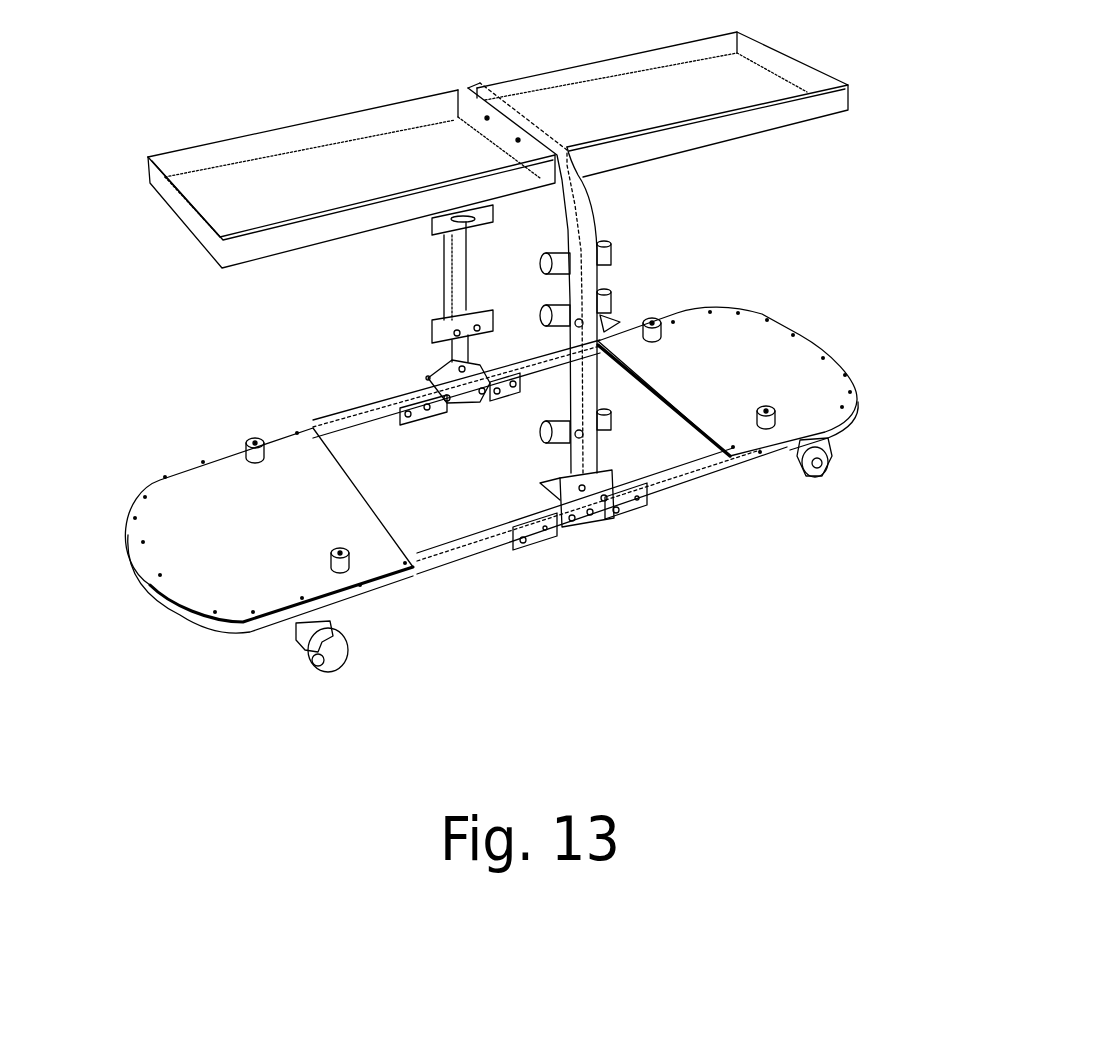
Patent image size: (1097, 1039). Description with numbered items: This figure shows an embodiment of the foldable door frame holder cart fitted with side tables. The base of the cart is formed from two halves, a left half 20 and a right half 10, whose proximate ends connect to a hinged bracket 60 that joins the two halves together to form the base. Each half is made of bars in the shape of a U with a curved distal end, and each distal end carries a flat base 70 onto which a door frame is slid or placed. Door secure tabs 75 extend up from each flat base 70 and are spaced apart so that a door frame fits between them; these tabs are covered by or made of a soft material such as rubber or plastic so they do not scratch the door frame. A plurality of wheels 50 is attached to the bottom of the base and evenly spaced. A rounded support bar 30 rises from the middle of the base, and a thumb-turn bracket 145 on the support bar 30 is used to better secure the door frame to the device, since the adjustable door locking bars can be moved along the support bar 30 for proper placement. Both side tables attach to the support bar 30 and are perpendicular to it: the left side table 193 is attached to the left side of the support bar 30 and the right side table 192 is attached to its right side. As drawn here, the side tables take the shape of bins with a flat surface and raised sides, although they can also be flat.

The left side table 193 is at (262, 155).
The right side table 192 is at (805, 75).
The support bar 30 is at (610, 212).
The thumb-turn bracket 145 is at (537, 437).
The flat base 70 is at (785, 330).
The door secure tabs 75 is at (320, 558).
The wheels 50 is at (345, 665).
The left half 20 is at (410, 585).
The right half 10 is at (757, 455).
The hinged bracket 60 is at (607, 518).